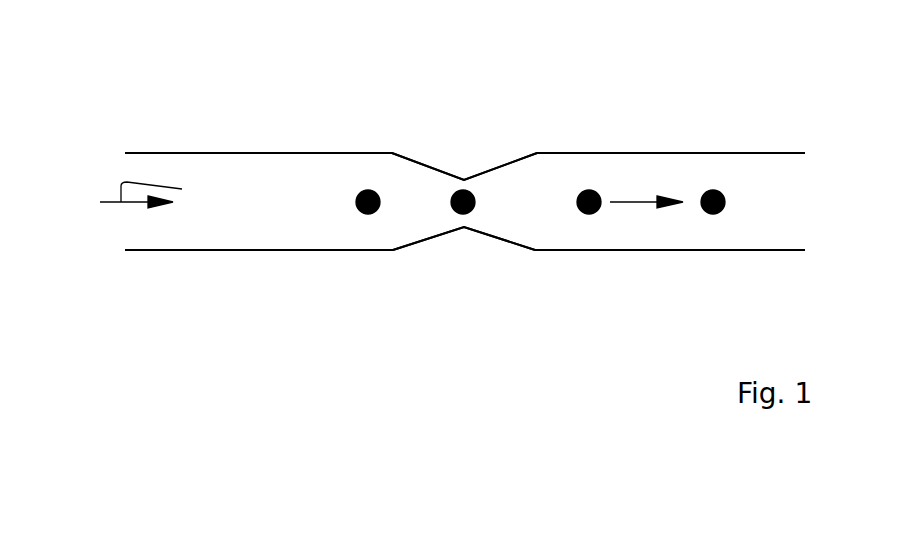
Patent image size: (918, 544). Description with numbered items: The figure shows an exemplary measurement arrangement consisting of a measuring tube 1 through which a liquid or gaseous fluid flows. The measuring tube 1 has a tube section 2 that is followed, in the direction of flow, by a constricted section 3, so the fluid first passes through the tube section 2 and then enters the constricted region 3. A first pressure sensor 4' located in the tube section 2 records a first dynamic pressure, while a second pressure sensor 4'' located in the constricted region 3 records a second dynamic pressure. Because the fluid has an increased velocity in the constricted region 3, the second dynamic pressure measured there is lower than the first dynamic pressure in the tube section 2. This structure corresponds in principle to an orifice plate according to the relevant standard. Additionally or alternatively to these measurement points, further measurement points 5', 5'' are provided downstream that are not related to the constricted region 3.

The measuring tube 1 is at (452, 176).
The tube section 2 is at (465, 240).
The constricted section 3 is at (473, 172).
The first pressure sensor 4' is at (381, 247).
The second pressure sensor 4'' is at (455, 247).
The further measurement point 5' is at (596, 246).
The further measurement point 5'' is at (685, 246).